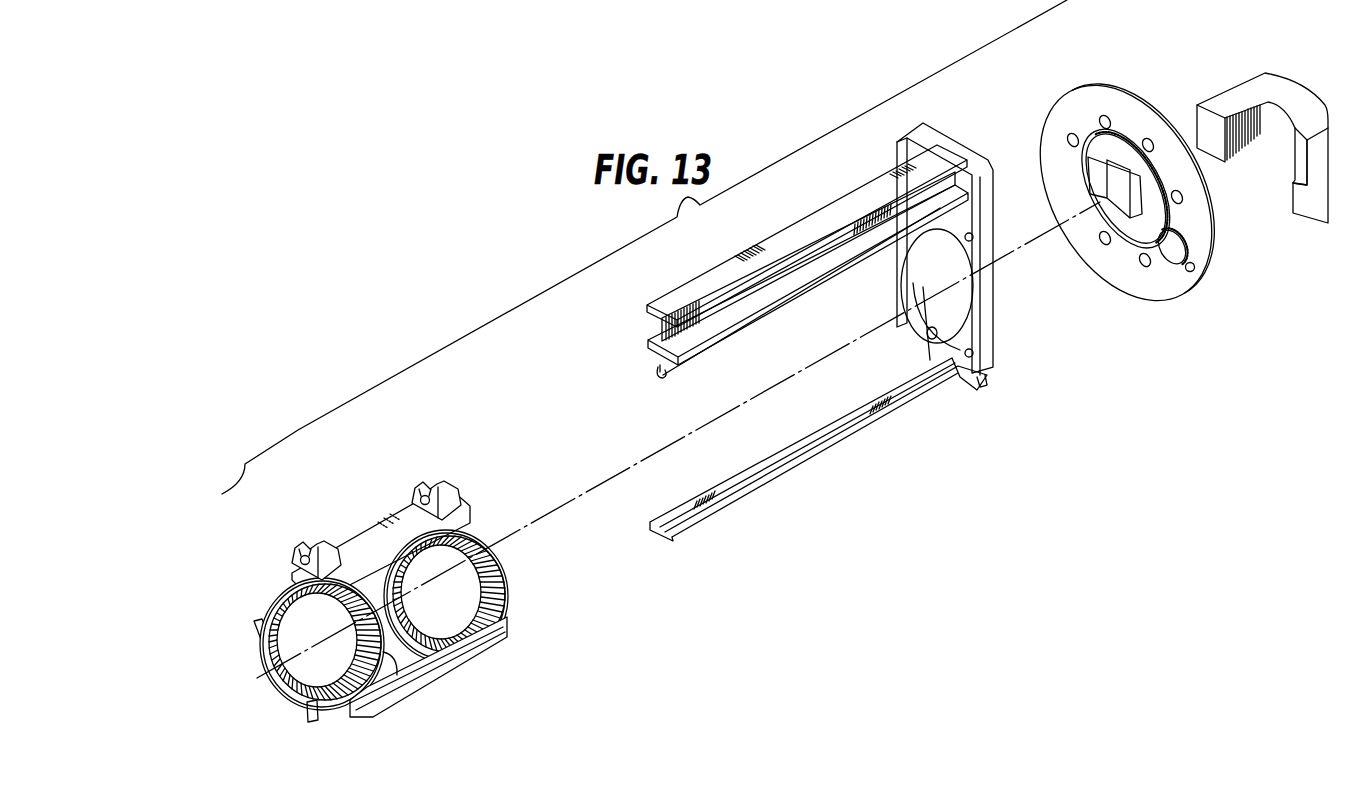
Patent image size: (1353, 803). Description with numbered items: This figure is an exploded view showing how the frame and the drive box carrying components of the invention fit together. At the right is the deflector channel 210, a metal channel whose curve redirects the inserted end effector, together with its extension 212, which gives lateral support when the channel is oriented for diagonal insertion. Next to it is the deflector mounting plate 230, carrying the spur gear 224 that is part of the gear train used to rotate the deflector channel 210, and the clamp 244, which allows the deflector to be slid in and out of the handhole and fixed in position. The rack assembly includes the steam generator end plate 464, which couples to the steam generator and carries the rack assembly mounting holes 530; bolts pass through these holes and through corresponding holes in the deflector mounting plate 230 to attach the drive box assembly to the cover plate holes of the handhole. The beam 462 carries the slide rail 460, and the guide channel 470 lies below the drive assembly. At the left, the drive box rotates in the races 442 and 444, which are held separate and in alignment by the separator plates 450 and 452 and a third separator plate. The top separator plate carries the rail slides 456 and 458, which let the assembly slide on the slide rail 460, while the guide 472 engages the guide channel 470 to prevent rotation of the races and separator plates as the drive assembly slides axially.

The deflector channel 210 is at (1287, 75).
The extension 212 is at (1293, 185).
The spur gear 224 is at (1198, 252).
The deflector mounting plate 230 is at (1083, 83).
The clamp 244 is at (1090, 172).
The drive box race 442 is at (508, 596).
The drive box race 444 is at (390, 658).
The separator plate 450 is at (440, 670).
The separator plate 452 is at (370, 520).
The rail slide 456 is at (428, 483).
The rail slide 458 is at (311, 543).
The slide rail 460 is at (706, 347).
The beam 462 is at (755, 245).
The steam generator end plate 464 is at (943, 127).
The guide channel 470 is at (675, 537).
The guide 472 is at (310, 716).
The rack assembly mounting holes 530 is at (941, 234).